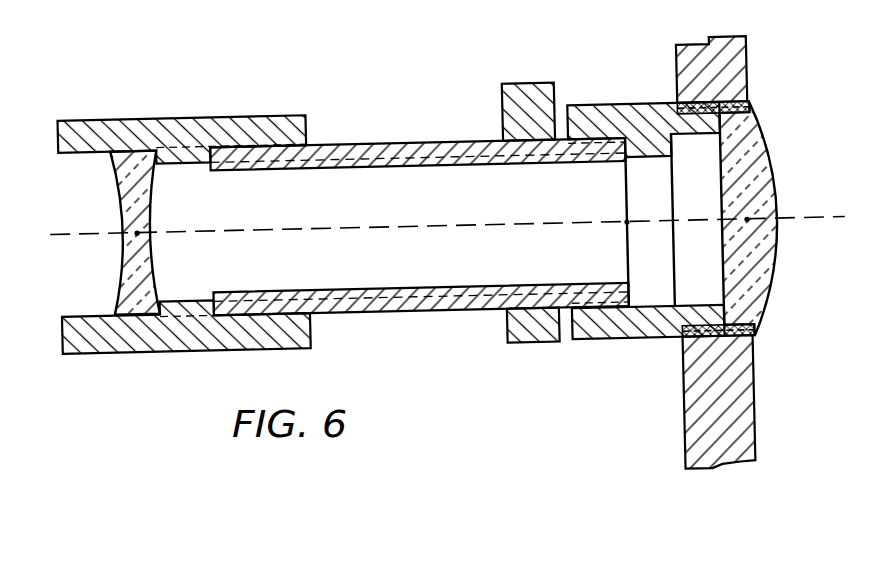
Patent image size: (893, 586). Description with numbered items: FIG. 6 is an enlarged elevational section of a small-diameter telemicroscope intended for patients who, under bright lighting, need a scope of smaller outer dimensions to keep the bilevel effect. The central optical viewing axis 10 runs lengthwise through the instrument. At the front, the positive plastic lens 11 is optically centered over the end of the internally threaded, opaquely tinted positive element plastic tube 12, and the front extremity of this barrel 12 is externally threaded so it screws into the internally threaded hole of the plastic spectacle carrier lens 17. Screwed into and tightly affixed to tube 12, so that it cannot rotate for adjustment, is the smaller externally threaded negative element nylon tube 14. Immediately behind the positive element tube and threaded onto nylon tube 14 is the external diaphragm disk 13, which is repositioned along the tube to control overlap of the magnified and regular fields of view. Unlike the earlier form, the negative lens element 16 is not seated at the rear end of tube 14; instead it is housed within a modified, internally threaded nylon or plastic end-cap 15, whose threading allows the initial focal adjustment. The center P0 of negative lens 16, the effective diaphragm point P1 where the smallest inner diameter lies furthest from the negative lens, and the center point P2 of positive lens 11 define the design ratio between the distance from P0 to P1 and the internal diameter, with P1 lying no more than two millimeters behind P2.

The central optical viewing axis 10 is at (806, 216).
The positive plastic lens 11 is at (772, 178).
The positive element plastic tube 12 is at (638, 343).
The external diaphragm disk 13 is at (530, 345).
The negative element nylon tube 14 is at (434, 307).
The end-cap 15 is at (221, 352).
The negative lens element 16 is at (118, 185).
The plastic spectacle carrier lens 17 is at (745, 421).
The center of negative lens element P0 is at (136, 236).
The effective diaphragm point P1 is at (625, 228).
The center point of positive lens P2 is at (745, 221).